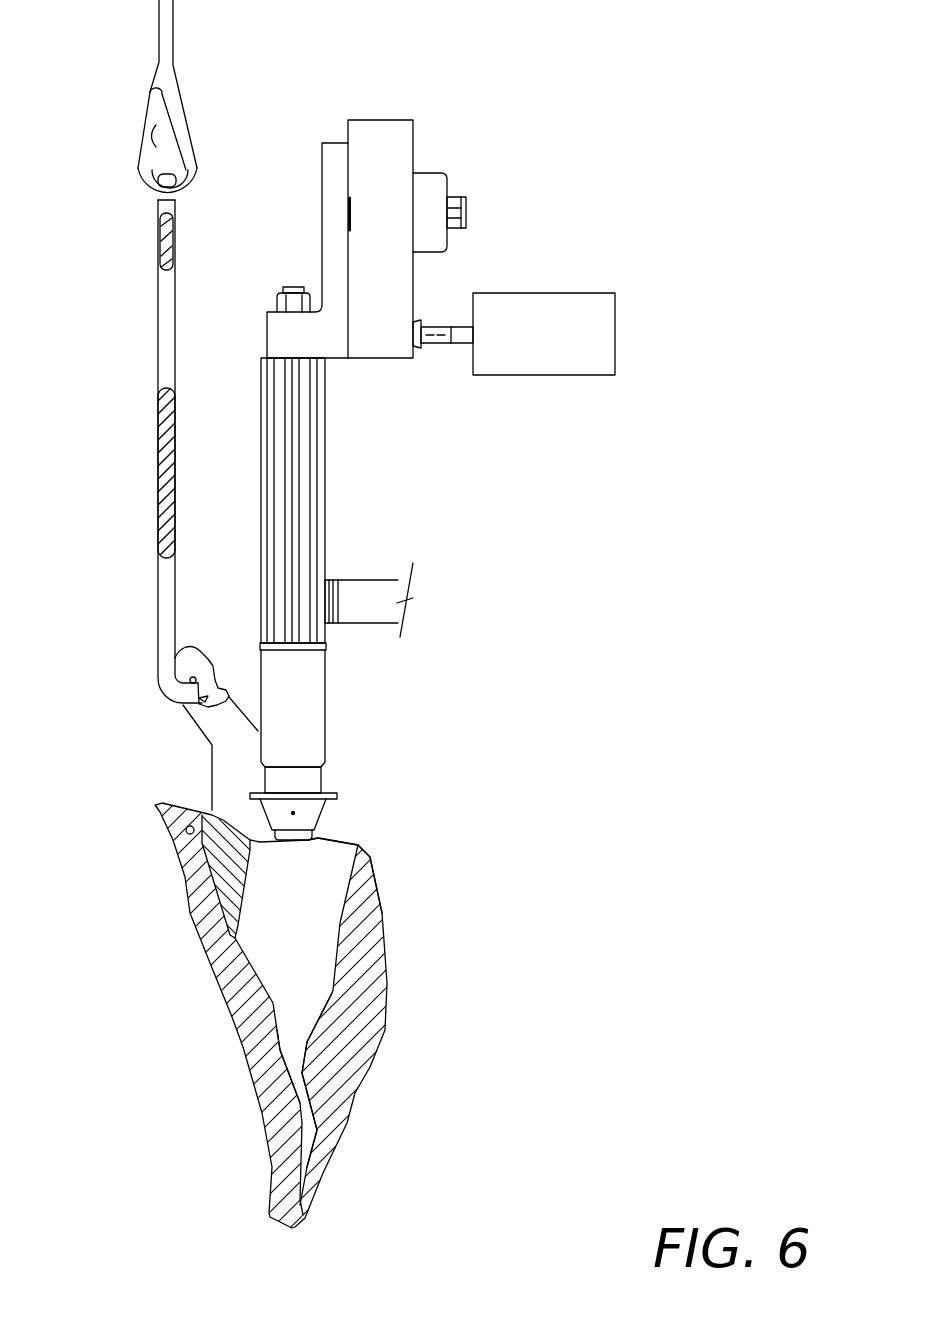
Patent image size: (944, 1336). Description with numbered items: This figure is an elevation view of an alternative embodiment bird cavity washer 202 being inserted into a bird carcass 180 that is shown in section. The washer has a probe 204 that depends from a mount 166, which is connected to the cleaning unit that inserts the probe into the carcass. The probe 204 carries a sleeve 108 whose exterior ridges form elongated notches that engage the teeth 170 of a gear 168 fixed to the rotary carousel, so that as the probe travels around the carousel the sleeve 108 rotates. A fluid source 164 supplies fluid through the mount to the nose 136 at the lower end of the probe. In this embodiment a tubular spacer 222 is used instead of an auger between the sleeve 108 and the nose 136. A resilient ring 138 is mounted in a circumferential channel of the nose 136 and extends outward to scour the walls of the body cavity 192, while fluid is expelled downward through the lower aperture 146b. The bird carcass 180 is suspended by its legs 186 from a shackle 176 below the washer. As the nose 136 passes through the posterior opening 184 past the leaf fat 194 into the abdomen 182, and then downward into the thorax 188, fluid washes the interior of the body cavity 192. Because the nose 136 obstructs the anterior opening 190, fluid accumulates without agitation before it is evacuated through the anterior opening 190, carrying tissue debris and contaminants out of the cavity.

The sleeve 108 is at (293, 485).
The nose 136 is at (313, 780).
The resilient ring 138 is at (322, 797).
The lower aperture 146b is at (303, 815).
The fluid source 164 is at (555, 375).
The mount 166 is at (440, 125).
The gear 168 is at (387, 592).
The teeth 170 is at (327, 572).
The shackle 176 is at (157, 345).
The bird carcass 180 is at (192, 1092).
The abdomen 182 is at (283, 950).
The posterior opening 184 is at (348, 860).
The legs 186 is at (217, 732).
The thorax 188 is at (290, 1033).
The anterior opening 190 is at (302, 1102).
The body cavity 192 is at (300, 1015).
The leaf fat 194 is at (233, 883).
The bird cavity washer 202 is at (542, 502).
The probe 204 is at (542, 613).
The tubular spacer 222 is at (305, 730).